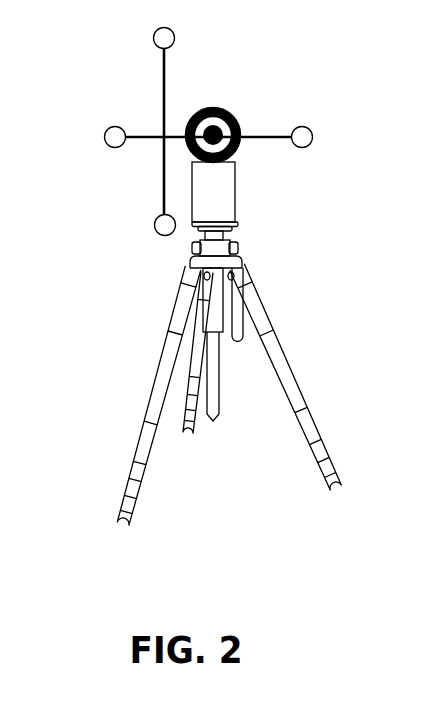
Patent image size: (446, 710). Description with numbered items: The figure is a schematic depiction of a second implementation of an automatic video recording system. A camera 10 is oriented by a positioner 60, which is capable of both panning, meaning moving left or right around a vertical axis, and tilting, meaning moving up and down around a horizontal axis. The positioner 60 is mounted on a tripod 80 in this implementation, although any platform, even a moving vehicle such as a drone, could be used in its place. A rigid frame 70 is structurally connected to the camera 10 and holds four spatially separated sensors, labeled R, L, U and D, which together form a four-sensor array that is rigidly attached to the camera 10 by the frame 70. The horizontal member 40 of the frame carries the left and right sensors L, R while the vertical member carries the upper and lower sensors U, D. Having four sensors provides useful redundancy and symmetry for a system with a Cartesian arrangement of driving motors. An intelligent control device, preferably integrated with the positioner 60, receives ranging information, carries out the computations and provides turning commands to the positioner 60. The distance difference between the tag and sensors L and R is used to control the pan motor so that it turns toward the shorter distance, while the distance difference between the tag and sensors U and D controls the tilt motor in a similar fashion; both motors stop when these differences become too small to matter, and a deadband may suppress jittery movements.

The camera 10 is at (233, 110).
The horizontal direction bar 40 is at (274, 135).
The positioner 60 is at (228, 202).
The frame 70 is at (163, 168).
The tripod 80 is at (273, 343).
The sensor U is at (153, 38).
The sensor L is at (104, 136).
The sensor R is at (313, 138).
The sensor D is at (154, 223).